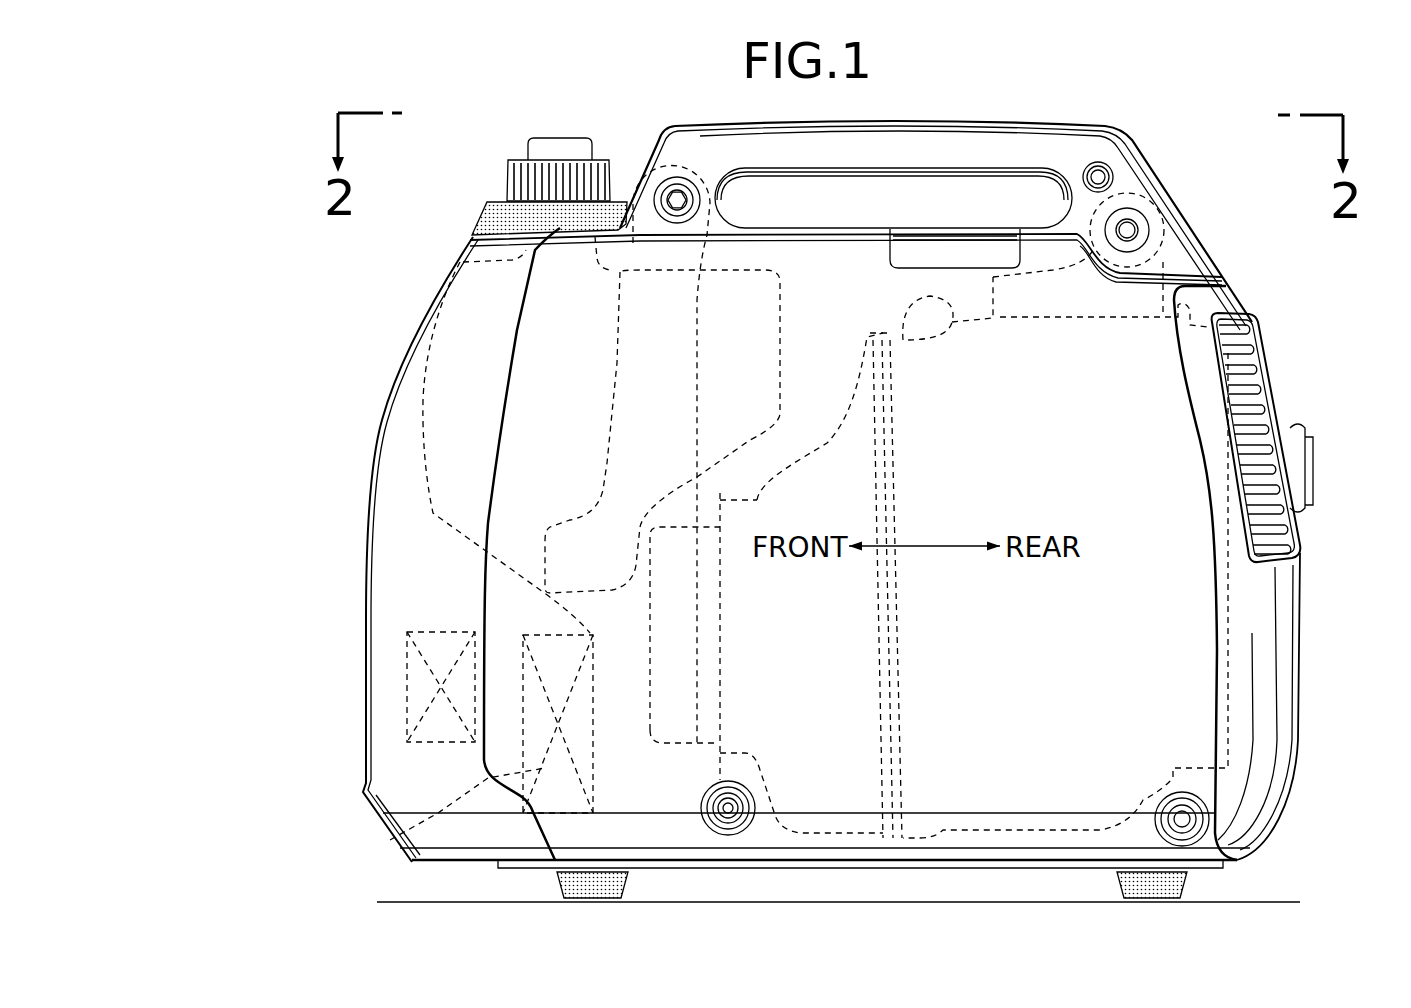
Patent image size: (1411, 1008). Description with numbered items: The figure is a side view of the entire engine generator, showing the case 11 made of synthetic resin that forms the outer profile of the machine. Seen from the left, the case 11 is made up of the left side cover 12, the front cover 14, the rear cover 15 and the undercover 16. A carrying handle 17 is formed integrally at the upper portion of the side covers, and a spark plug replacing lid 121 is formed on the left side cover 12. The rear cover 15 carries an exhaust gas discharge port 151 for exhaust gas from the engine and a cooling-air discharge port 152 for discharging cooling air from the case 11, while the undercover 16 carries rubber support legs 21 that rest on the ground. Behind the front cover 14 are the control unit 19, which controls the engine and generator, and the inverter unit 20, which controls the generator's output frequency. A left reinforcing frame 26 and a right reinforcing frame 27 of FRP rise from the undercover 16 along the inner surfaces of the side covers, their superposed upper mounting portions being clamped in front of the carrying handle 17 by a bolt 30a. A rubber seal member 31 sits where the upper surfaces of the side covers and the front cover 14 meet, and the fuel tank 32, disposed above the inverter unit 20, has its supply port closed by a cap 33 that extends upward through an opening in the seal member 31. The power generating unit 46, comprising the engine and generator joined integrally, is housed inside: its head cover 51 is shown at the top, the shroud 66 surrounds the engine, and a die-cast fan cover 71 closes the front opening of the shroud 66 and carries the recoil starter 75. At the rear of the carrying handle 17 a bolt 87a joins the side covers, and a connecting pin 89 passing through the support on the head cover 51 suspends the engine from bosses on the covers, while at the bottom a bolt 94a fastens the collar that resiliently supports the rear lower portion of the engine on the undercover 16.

The case 11 is at (370, 383).
The left side cover 12 is at (481, 588).
The front cover 14 is at (368, 685).
The rear cover 15 is at (1304, 612).
The exhaust gas discharge port 151 is at (1304, 440).
The cooling-air discharge port 152 is at (1262, 357).
The undercover 16 is at (887, 873).
The carrying handle 17 is at (940, 180).
The control unit 19 is at (410, 742).
The inverter unit 20 is at (388, 840).
The support legs 21 is at (600, 883).
The left reinforcing frame 26 is at (620, 270).
The right reinforcing frame 27 is at (672, 398).
The bolt 30a is at (680, 200).
The seal member 31 is at (487, 216).
The fuel tank 32 is at (437, 483).
The cap 33 is at (520, 178).
The power generating unit 46 is at (890, 320).
The head cover 51 is at (1166, 263).
The shroud 66 is at (1238, 698).
The fan cover 71 is at (825, 375).
The recoil starter 75 is at (652, 526).
The bolt 87a is at (1100, 177).
The connecting pin 89 is at (1130, 230).
The bolt 94a is at (740, 800).
The spark plug replacing lid 121 is at (957, 250).